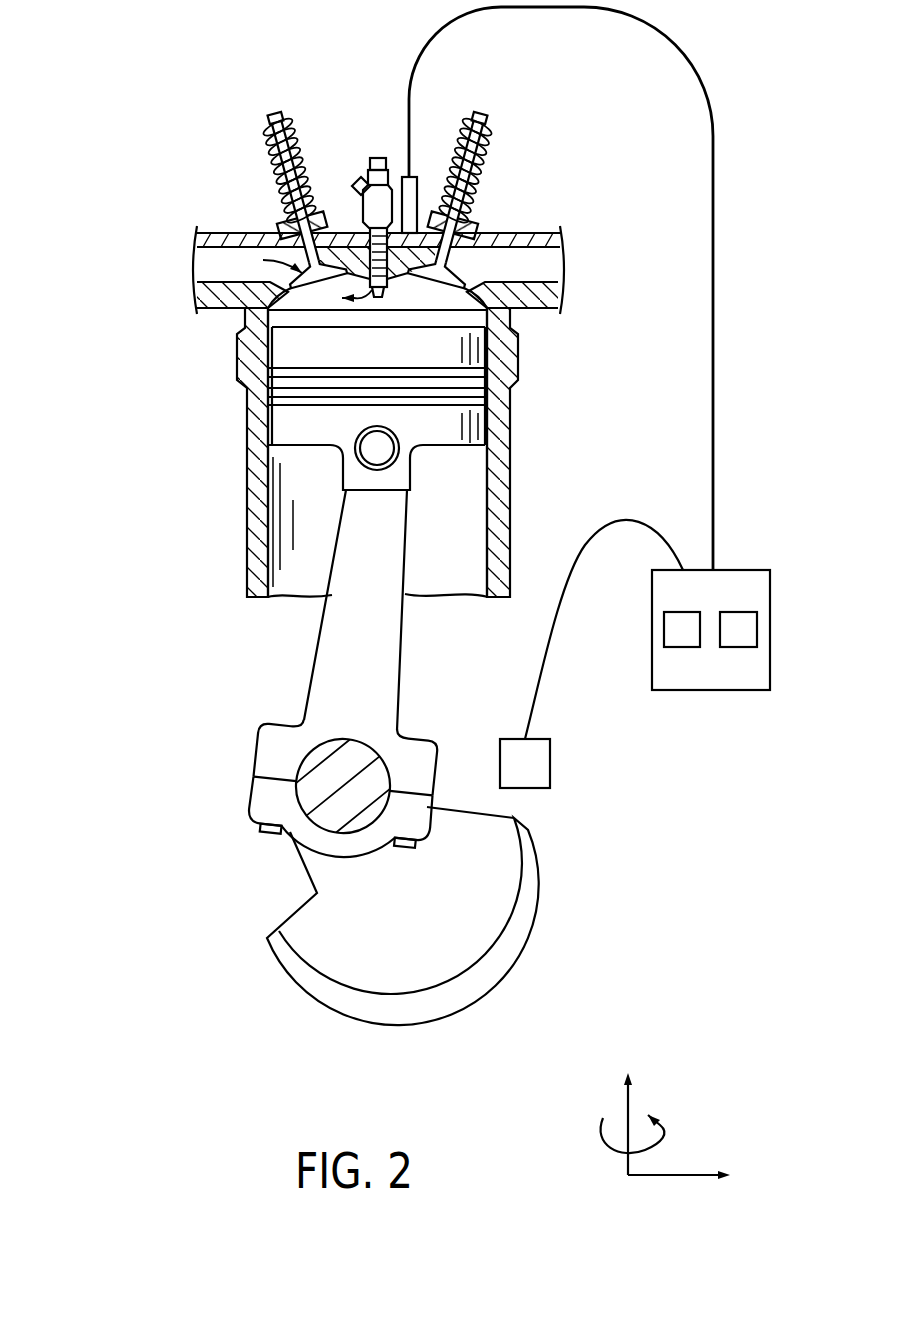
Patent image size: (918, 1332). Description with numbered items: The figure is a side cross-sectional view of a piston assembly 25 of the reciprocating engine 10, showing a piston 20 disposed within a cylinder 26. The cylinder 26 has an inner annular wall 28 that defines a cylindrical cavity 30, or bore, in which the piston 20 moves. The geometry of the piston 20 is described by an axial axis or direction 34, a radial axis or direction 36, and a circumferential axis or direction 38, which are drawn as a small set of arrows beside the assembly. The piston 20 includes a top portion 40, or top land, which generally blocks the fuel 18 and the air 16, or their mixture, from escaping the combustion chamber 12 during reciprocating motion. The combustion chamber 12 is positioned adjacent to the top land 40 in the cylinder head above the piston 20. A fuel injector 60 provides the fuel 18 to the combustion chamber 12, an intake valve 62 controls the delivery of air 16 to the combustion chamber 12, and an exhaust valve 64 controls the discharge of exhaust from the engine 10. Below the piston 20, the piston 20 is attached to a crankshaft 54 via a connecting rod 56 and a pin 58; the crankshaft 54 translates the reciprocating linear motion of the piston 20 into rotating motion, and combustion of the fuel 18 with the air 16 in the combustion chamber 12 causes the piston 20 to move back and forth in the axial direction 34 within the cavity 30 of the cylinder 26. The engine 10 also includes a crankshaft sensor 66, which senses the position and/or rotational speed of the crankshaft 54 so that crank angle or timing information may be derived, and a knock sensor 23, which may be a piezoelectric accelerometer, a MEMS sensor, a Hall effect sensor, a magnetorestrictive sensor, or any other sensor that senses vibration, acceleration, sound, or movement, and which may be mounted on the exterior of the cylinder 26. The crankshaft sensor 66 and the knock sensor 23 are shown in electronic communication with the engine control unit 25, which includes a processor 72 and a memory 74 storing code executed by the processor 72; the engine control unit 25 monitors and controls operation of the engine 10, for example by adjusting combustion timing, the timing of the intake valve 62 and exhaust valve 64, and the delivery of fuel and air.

The reciprocating engine 10 is at (606, 133).
The combustion chamber 12 is at (420, 295).
The air 16 is at (277, 237).
The fuel 18 is at (378, 142).
The piston 20 is at (453, 435).
The knock sensor 23 is at (418, 182).
The engine control unit 25 is at (740, 570).
The cylinder 26 is at (245, 482).
The inner annular wall 28 is at (277, 523).
The cylindrical cavity 30 is at (318, 589).
The axial axis 34 is at (628, 1108).
The radial axis 36 is at (672, 1175).
The circumferential axis 38 is at (652, 1147).
The top portion 40 is at (440, 358).
The crankshaft 54 is at (312, 930).
The connecting rod 56 is at (378, 701).
The pin 58 is at (380, 455).
The fuel injector 60 is at (388, 170).
The intake valve 62 is at (275, 115).
The exhaust valve 64 is at (485, 115).
The crankshaft sensor 66 is at (550, 767).
The processor 72 is at (686, 647).
The memory 74 is at (737, 647).